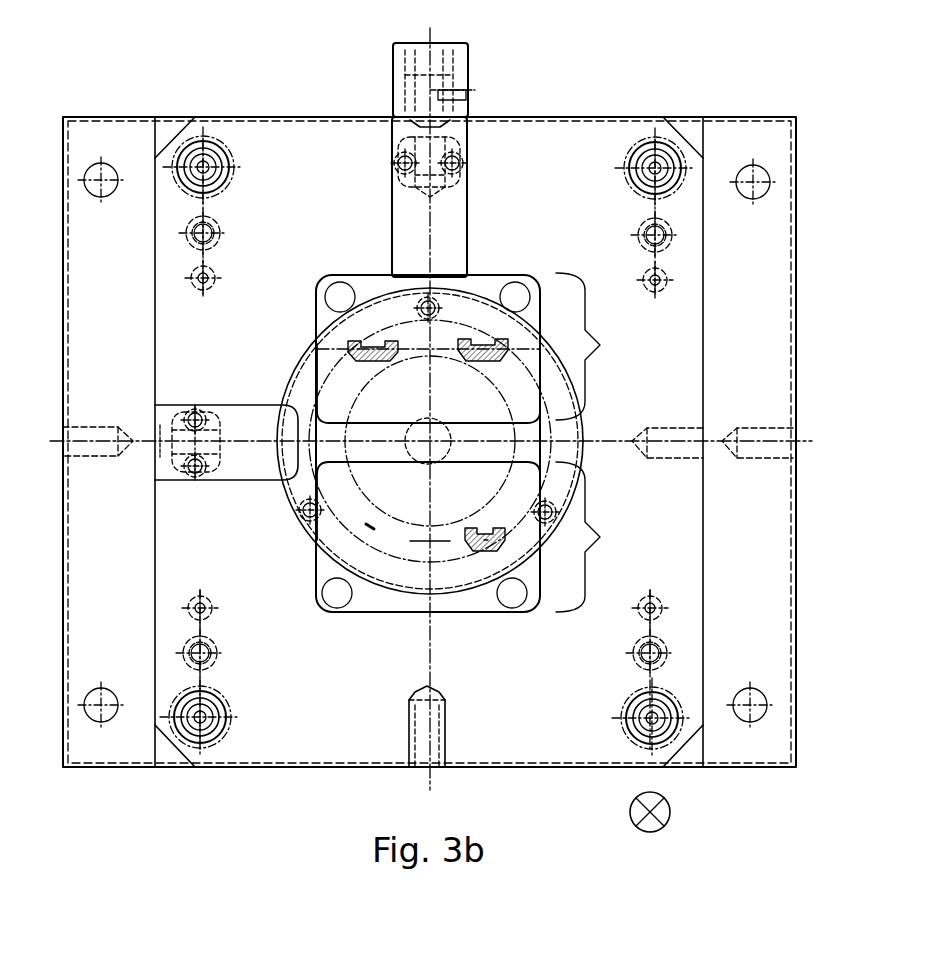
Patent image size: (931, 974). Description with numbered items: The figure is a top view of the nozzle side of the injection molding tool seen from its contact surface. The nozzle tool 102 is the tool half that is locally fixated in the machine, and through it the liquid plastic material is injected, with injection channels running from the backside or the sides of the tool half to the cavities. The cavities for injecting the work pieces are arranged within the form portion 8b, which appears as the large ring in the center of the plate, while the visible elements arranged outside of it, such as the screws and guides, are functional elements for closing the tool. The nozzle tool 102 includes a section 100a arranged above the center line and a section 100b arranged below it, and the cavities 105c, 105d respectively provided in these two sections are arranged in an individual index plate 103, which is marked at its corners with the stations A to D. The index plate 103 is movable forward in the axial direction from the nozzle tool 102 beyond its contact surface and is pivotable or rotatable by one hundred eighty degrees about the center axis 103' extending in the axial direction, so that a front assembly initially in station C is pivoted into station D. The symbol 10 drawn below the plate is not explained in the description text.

The nozzle tool 102 is at (429, 442).
The index plate 103 is at (427, 466).
The center axis 103' is at (451, 383).
The section 100a is at (491, 348).
The section 100b is at (491, 537).
The form portion 8b is at (540, 378).
The cavity 105c is at (272, 569).
The cavity 105d is at (500, 546).
The reference point symbol 10 is at (670, 812).